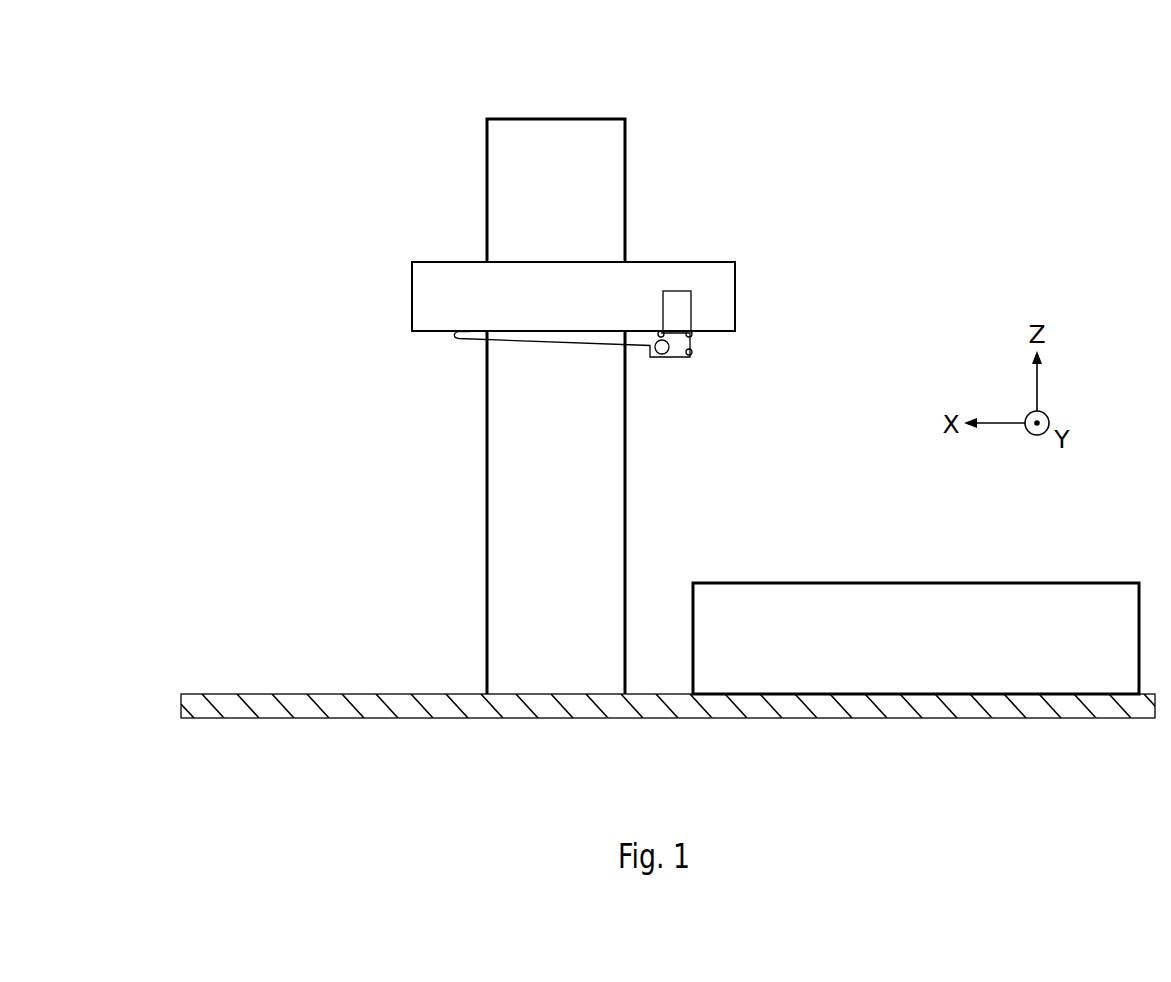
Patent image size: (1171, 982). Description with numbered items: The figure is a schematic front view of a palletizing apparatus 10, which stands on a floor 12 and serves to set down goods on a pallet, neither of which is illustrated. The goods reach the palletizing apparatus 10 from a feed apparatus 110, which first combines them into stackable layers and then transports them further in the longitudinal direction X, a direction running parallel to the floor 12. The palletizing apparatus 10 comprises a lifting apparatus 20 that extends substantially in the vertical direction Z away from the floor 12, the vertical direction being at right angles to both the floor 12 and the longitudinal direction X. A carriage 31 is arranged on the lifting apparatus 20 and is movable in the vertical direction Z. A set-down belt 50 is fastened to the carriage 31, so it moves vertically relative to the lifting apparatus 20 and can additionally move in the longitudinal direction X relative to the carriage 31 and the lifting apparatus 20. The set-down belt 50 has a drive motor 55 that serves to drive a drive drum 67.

The palletizing apparatus 10 is at (940, 231).
The floor 12 is at (325, 706).
The lifting apparatus 20 is at (548, 130).
The carriage 31 is at (443, 280).
The set-down belt 50 is at (699, 360).
The drive motor 55 is at (679, 302).
The drive drum 67 is at (662, 358).
The feed apparatus 110 is at (909, 590).